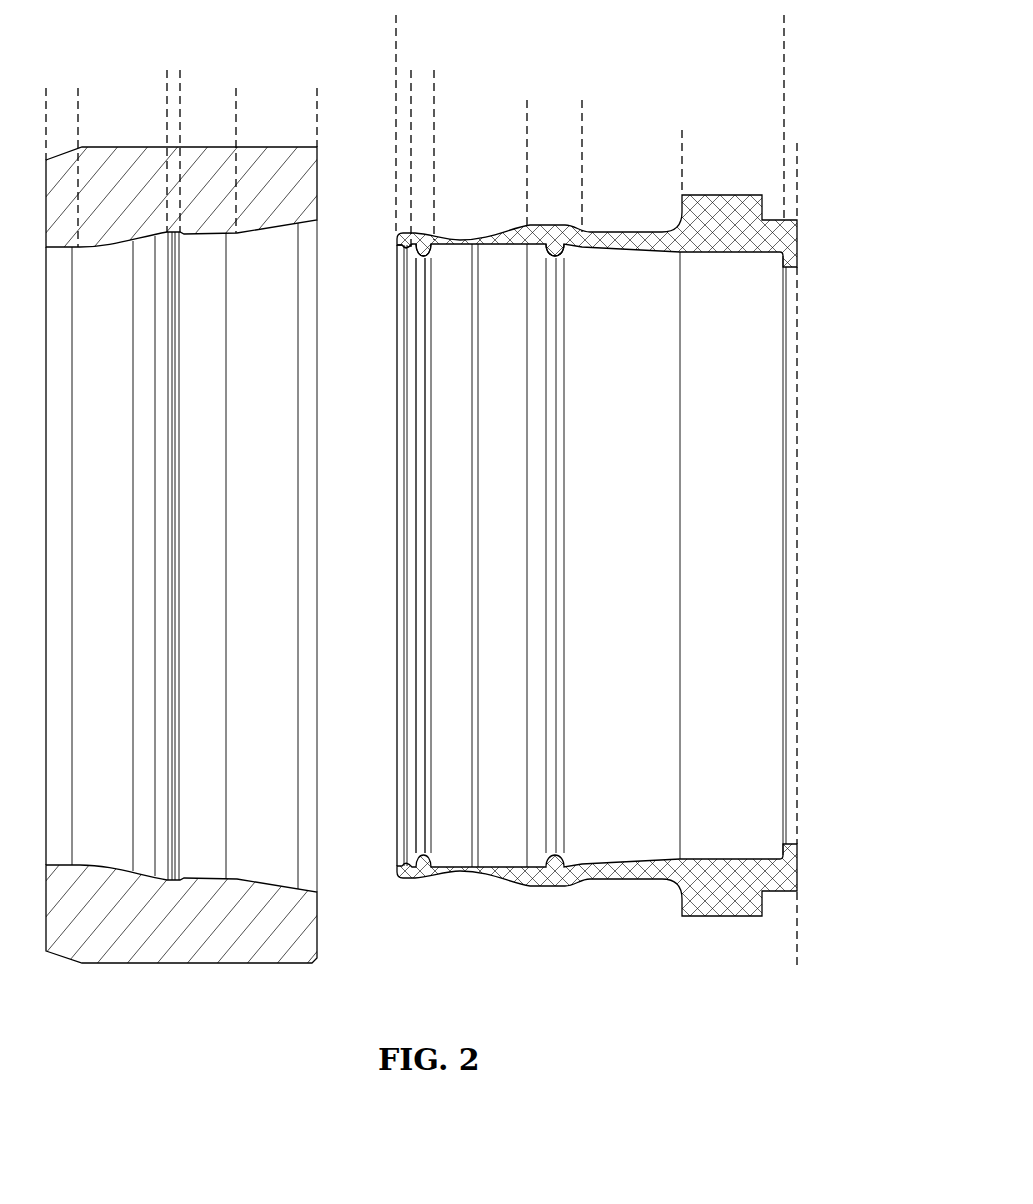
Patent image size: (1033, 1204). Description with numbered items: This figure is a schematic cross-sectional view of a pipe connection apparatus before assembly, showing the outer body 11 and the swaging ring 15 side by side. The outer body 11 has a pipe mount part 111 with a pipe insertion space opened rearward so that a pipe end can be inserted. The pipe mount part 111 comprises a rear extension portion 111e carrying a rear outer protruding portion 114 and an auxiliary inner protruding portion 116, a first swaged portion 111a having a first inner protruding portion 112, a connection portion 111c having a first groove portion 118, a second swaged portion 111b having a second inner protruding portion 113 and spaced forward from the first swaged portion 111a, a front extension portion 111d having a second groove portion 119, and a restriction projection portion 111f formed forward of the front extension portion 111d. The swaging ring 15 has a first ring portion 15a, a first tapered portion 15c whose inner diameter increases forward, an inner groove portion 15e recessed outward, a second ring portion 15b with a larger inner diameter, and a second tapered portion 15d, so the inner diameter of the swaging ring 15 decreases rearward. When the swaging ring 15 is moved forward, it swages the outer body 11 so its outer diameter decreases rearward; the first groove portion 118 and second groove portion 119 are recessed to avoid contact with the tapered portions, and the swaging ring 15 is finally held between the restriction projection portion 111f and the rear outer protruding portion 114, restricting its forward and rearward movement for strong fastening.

The outer body 11 is at (788, 237).
The swaging ring 15 is at (318, 52).
The first ring portion 15a is at (69, 102).
The second ring portion 15b is at (227, 118).
The first tapered portion 15c is at (158, 118).
The second tapered portion 15d is at (308, 118).
The inner groove portion 15e is at (189, 82).
The pipe mount part 111 is at (775, 30).
The first swaged portion 111a is at (425, 86).
The second swaged portion 111b is at (573, 118).
The connection portion 111c is at (518, 156).
The front extension portion 111d is at (673, 156).
The rear extension portion 111e is at (420, 140).
The restriction projection portion 111f is at (720, 200).
The first inner protruding portion 112 is at (438, 247).
The second inner protruding portion 113 is at (573, 247).
The rear outer protruding portion 114 is at (397, 232).
The auxiliary inner protruding portion 116 is at (397, 247).
The first groove portion 118 is at (507, 230).
The second groove portion 119 is at (645, 228).